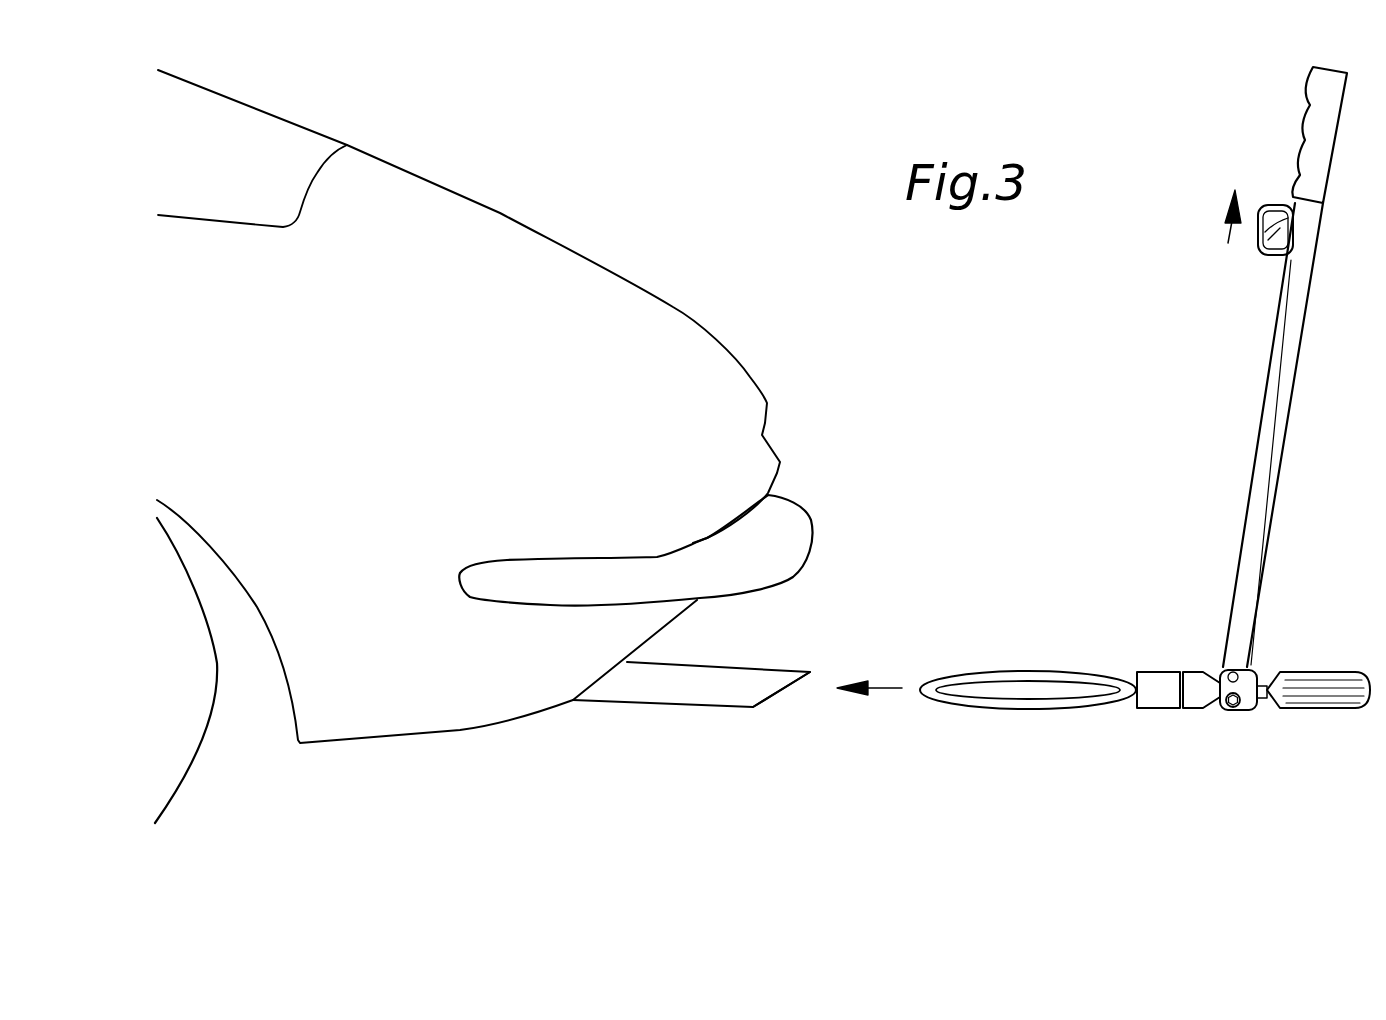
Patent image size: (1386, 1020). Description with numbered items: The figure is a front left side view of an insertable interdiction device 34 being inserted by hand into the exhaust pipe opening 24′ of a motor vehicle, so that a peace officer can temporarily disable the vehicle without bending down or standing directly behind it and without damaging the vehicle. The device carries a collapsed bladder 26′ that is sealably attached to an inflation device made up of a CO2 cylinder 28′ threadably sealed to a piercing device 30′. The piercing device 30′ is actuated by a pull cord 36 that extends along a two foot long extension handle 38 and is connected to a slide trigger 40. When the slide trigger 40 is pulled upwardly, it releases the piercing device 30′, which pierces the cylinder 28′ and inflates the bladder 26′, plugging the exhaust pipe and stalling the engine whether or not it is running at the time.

The opening 24′ is at (790, 692).
The collapsed bladder 26′ is at (1020, 688).
The piercing device 30′ is at (1153, 687).
The pull cord 36 is at (1257, 648).
The CO2 cylinder 28′ is at (1317, 688).
The extension handle 38 is at (1287, 367).
The slide trigger 40 is at (1258, 255).
The insertable interdiction device 34 is at (1145, 440).